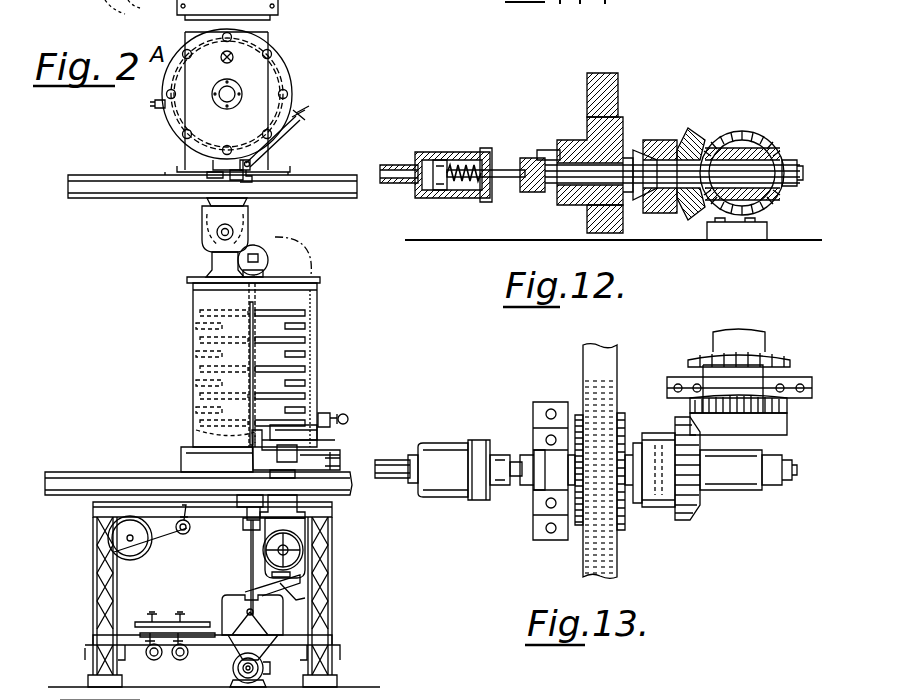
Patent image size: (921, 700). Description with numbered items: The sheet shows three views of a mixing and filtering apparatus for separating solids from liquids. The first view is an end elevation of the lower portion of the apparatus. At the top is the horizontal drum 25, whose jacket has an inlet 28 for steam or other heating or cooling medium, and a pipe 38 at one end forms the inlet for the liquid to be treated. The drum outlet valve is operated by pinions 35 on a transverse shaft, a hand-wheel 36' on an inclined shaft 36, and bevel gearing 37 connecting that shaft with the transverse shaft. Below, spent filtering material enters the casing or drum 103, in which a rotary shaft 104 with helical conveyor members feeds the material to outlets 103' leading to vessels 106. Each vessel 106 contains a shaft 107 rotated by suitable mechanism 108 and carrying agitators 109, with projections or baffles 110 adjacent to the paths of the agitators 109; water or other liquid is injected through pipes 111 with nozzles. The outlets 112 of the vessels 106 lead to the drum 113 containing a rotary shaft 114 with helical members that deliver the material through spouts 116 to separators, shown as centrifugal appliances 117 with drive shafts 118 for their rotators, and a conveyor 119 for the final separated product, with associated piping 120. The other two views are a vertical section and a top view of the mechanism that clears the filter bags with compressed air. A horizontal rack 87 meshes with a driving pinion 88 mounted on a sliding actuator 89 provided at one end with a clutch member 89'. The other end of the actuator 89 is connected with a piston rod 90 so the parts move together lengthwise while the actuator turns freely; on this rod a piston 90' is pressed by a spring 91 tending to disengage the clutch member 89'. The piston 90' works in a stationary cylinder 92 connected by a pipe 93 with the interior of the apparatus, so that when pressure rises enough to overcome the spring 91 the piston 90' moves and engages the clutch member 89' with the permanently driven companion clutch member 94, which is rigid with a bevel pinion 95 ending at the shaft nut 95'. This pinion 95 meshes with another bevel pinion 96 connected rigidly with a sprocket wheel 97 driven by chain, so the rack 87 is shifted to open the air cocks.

In FIG. 2A, the horizontal drum 25 is at (283, 78).
In FIG. 2A, the inlet 28 is at (156, 103).
In FIG. 2A, the pinions 35 is at (232, 182).
In FIG. 2A, the inclined shaft 36 is at (283, 141).
In FIG. 2A, the hand-wheel 36' is at (322, 116).
In FIG. 2A, the bevel gearing 37 is at (252, 164).
In FIG. 2A, the pipe 38 is at (233, 57).
In FIG. 2A, the casing or drum 103 is at (197, 225).
In FIG. 2A, the outlets 103' is at (193, 267).
In FIG. 2A, the rotary shaft 104 is at (222, 233).
In FIG. 2A, the vessels 106 is at (205, 303).
In FIG. 2A, the shaft 107 is at (257, 352).
In FIG. 2A, the mechanism 108 is at (256, 256).
In FIG. 2A, the agitators 109 is at (300, 313).
In FIG. 2A, the projections or baffles 110 is at (306, 380).
In FIG. 2A, the pipes 111 is at (300, 427).
In FIG. 2A, the outlets 112 is at (282, 494).
In FIG. 2A, the drum 113 is at (298, 543).
In FIG. 2A, the rotary shaft 114 is at (305, 572).
In FIG. 2A, the spouts 116 is at (262, 578).
In FIG. 2A, the centrifugal appliances 117 is at (235, 612).
In FIG. 2A, the drive shafts 118 is at (250, 546).
In FIG. 2A, the conveyor 119 is at (262, 671).
In FIG. 2A, the pipe valves 120 is at (175, 645).
In FIG. 12, the horizontal rack 87 is at (595, 84).
In FIG. 13, the horizontal rack 87 is at (600, 461).
In FIG. 12, the driving pinion 88 is at (590, 138).
In FIG. 13, the driving pinion 88 is at (582, 416).
In FIG. 12, the sliding actuator 89 is at (533, 189).
In FIG. 13, the sliding actuator 89 is at (526, 494).
In FIG. 12, the clutch member 89' is at (640, 156).
In FIG. 13, the clutch member 89' is at (641, 492).
In FIG. 12, the piston rod 90 is at (486, 151).
In FIG. 13, the piston rod 90 is at (509, 451).
In FIG. 12, the piston 90' is at (436, 195).
In FIG. 12, the spring 91 is at (458, 162).
In FIG. 12, the stationary cylinder 92 is at (466, 199).
In FIG. 13, the stationary cylinder 92 is at (459, 470).
In FIG. 12, the pipe 93 is at (393, 164).
In FIG. 13, the pipe 93 is at (386, 458).
In FIG. 12, the companion clutch member 94 is at (665, 143).
In FIG. 13, the companion clutch member 94 is at (661, 433).
In FIG. 12, the bevel pinion 95 is at (711, 161).
In FIG. 13, the bevel pinion 95 is at (705, 473).
In FIG. 12, the shaft end nut 95' is at (800, 192).
In FIG. 12, the bevel pinion 96 is at (757, 135).
In FIG. 13, the bevel pinion 96 is at (787, 427).
In FIG. 13, the sprocket wheel 97 is at (706, 353).